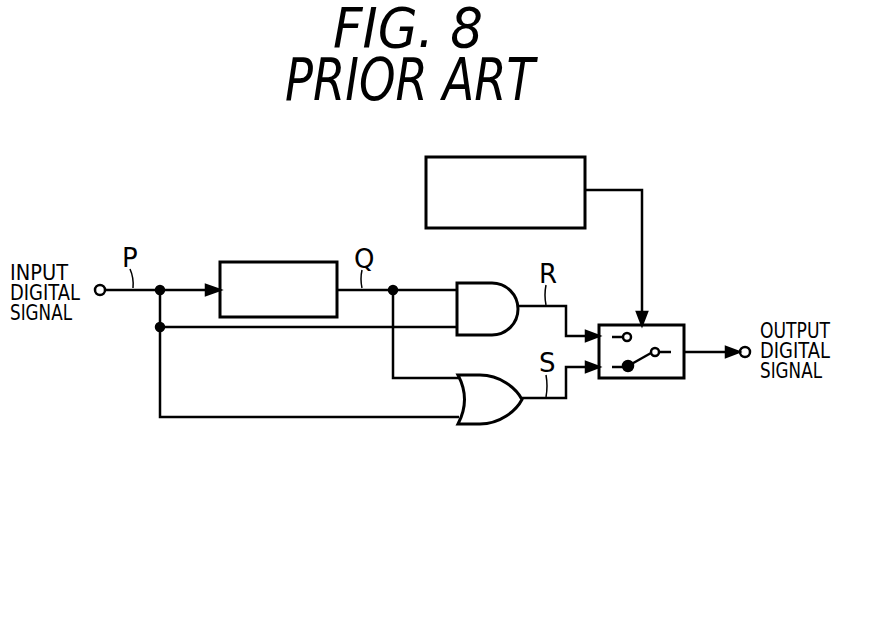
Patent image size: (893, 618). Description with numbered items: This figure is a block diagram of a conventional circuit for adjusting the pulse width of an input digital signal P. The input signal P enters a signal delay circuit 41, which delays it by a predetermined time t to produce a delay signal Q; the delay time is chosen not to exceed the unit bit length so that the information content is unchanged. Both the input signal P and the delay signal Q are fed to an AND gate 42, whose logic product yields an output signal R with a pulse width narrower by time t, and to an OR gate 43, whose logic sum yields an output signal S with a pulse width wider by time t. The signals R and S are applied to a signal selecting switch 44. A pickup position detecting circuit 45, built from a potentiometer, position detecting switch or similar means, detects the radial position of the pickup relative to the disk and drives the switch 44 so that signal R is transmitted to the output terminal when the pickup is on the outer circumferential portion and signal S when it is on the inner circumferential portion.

The signal delay circuit 41 is at (308, 262).
The AND gate 42 is at (490, 283).
The OR gate 43 is at (478, 375).
The signal selecting switch 44 is at (673, 325).
The pickup position detecting circuit 45 is at (558, 157).